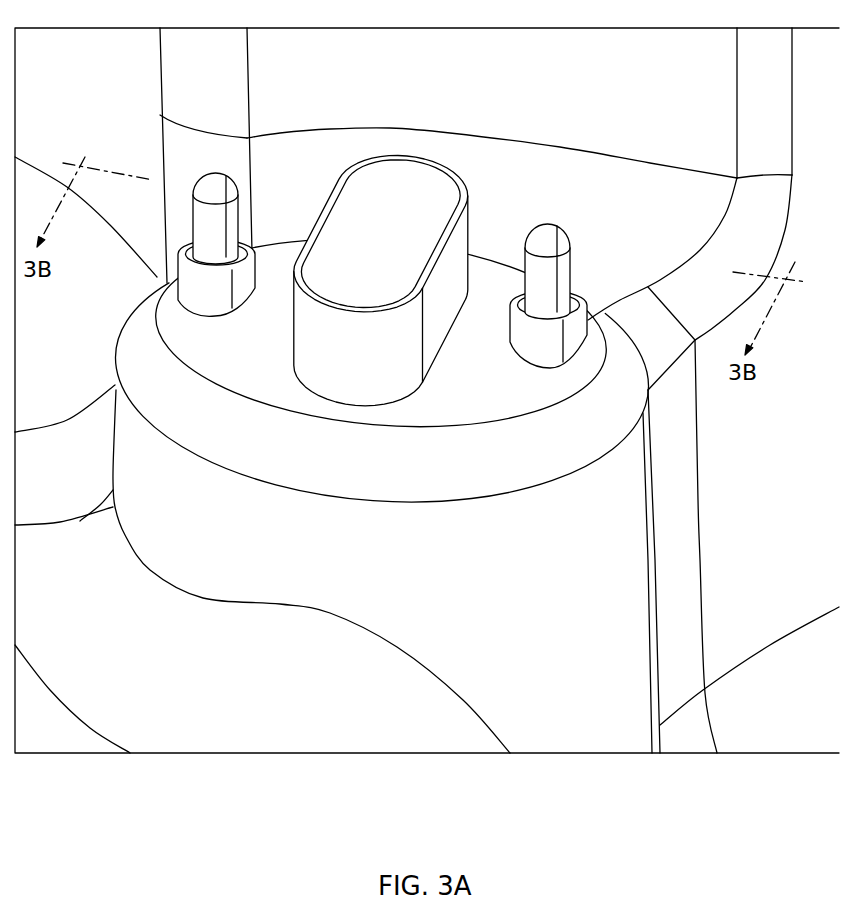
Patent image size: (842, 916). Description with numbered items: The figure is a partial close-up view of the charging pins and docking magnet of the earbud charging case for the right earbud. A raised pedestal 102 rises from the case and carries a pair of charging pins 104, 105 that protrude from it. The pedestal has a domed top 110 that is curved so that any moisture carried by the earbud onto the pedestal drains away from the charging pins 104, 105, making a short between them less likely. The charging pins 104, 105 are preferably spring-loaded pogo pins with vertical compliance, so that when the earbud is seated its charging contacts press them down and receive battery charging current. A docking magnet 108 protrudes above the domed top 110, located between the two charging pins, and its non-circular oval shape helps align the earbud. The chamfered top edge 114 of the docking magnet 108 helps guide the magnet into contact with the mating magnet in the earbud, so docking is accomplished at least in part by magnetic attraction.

The pedestal 102 is at (172, 545).
The charging pin 104 is at (232, 187).
The charging pin 105 is at (558, 243).
The docking magnet 108 is at (403, 175).
The domed top 110 is at (503, 473).
The chamfered top edge 114 is at (382, 312).